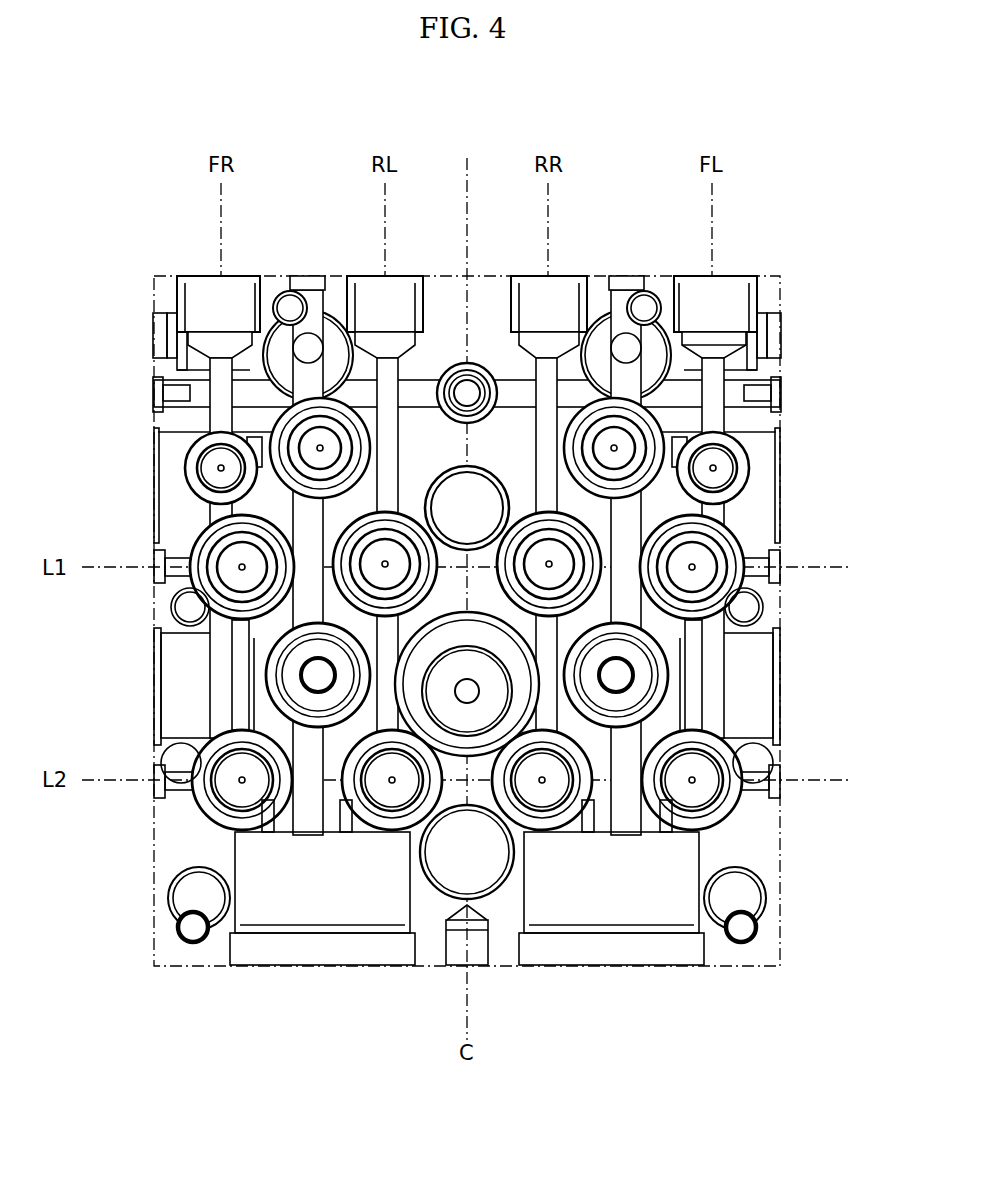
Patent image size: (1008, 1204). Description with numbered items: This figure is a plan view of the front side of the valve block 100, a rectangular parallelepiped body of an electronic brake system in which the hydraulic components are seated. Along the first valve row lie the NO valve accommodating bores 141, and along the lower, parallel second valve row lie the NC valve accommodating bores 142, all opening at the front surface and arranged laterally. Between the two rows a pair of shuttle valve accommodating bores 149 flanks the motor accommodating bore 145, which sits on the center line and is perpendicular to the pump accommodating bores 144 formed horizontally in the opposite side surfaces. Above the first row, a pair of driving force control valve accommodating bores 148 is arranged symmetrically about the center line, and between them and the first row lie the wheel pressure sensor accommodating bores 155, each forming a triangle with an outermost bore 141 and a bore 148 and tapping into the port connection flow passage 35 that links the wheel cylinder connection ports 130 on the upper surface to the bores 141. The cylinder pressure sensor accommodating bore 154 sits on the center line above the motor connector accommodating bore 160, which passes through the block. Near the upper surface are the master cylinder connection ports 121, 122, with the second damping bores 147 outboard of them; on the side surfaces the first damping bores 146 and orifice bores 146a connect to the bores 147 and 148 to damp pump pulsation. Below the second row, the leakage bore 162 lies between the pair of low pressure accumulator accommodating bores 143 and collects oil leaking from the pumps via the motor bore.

The valve block 100 is at (812, 248).
The wheel cylinder connection port 130 is at (345, 290).
The cylinder pressure sensor accommodating bore 154 is at (478, 370).
The master cylinder connection port 121 is at (235, 327).
The second damping bore 147 is at (750, 345).
The master cylinder connection port 122 is at (720, 338).
The driving force control valve accommodating bore 148 is at (280, 395).
The port connection flow passage 35 is at (215, 418).
The orifice bore 146a is at (190, 455).
The wheel pressure sensor accommodating bore 155 is at (200, 470).
The first damping bore 146 is at (172, 525).
The NO valve accommodating bore 141 is at (200, 575).
The pump accommodating bore 144 is at (185, 658).
The motor accommodating bore 145 is at (665, 668).
The shuttle valve accommodating bore 149 is at (230, 735).
The low pressure accumulator accommodating bore 143 is at (278, 950).
The NC valve accommodating bore 142 is at (352, 820).
The leakage bore 162 is at (445, 885).
The motor connector accommodating bore 160 is at (486, 521).